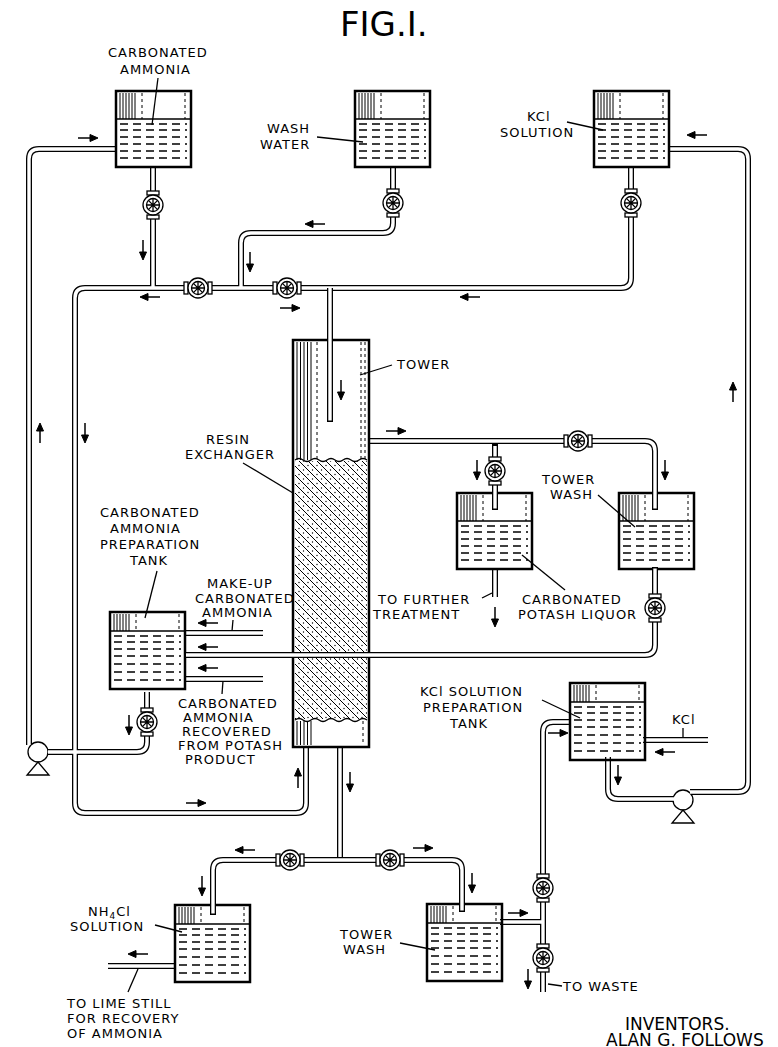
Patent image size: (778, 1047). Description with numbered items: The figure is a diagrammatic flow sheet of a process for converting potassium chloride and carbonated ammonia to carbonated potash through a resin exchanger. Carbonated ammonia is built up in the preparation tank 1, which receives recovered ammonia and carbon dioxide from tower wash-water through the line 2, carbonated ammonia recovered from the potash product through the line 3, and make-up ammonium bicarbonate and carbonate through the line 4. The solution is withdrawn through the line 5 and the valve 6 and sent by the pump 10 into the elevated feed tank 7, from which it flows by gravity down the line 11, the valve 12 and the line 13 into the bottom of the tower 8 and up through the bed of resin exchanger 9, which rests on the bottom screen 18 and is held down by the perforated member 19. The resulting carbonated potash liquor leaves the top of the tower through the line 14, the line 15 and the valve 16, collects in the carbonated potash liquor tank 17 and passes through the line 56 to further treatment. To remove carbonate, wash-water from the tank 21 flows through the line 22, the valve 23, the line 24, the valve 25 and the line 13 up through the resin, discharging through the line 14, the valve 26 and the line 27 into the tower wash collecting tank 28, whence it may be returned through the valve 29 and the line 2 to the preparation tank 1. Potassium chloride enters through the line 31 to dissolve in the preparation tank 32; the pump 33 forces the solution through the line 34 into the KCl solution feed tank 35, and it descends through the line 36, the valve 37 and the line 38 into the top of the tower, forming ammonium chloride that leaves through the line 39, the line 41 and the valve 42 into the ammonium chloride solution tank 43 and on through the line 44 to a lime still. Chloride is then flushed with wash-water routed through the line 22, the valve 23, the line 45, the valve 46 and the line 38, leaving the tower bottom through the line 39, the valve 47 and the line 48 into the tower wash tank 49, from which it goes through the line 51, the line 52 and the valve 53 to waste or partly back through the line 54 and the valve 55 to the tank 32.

The preparation tank 1 is at (125, 617).
The line 2 is at (540, 652).
The line 3 is at (262, 677).
The line 4 is at (193, 631).
The line 5 is at (144, 702).
The valve 6 is at (153, 734).
The feed tank 7 is at (117, 106).
The tower 8 is at (302, 368).
The resin exchanger 9 is at (297, 538).
The pump 10 is at (40, 774).
The line 11 is at (156, 181).
The valve 12 is at (142, 205).
The line 13 is at (78, 367).
The line 14 is at (443, 438).
The line 15 is at (490, 450).
The valve 16 is at (507, 468).
The carbonated potash liquor tank 17 is at (458, 544).
The bottom screen 18 is at (356, 727).
The perforated member 19 is at (367, 461).
The tank 21 is at (357, 103).
The line 22 is at (390, 181).
The valve 23 is at (403, 207).
The line 24 is at (229, 292).
The valve 25 is at (199, 278).
The valve 26 is at (580, 431).
The line 27 is at (635, 437).
The tower wash collecting tank 28 is at (620, 544).
The valve 29 is at (666, 608).
The line 31 is at (707, 743).
The preparation tank 32 is at (644, 693).
The pump 33 is at (683, 821).
The line 34 is at (744, 249).
The KCl solution feed tank 35 is at (600, 158).
The line 36 is at (633, 179).
The valve 37 is at (619, 204).
The line 38 is at (334, 317).
The line 39 is at (344, 812).
The line 41 is at (250, 864).
The valve 42 is at (293, 869).
The ammonium chloride solution tank 43 is at (253, 951).
The line 44 is at (110, 967).
The line 45 is at (261, 292).
The valve 46 is at (288, 278).
The valve 47 is at (390, 868).
The line 48 is at (462, 853).
The tower wash tank 49 is at (457, 975).
The line 51 is at (522, 926).
The line 52 is at (547, 933).
The valve 53 is at (555, 957).
The line 54 is at (547, 910).
The valve 55 is at (553, 880).
The line 56 is at (491, 580).